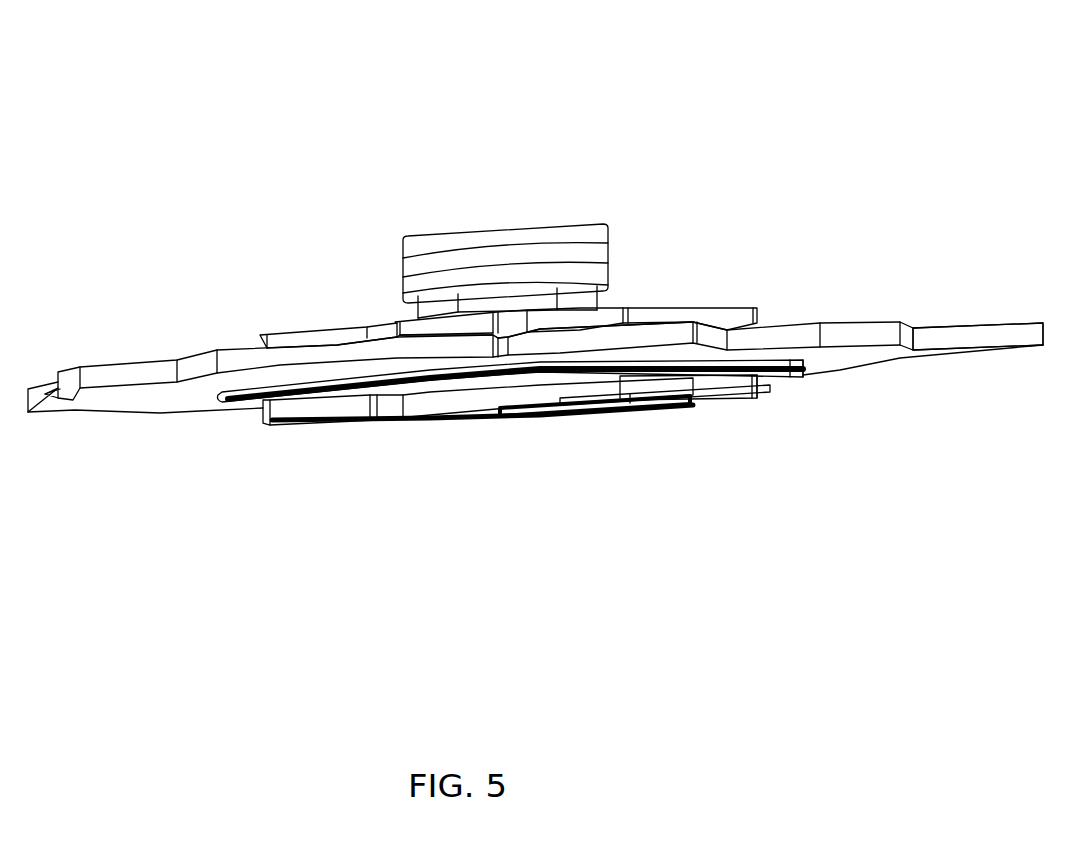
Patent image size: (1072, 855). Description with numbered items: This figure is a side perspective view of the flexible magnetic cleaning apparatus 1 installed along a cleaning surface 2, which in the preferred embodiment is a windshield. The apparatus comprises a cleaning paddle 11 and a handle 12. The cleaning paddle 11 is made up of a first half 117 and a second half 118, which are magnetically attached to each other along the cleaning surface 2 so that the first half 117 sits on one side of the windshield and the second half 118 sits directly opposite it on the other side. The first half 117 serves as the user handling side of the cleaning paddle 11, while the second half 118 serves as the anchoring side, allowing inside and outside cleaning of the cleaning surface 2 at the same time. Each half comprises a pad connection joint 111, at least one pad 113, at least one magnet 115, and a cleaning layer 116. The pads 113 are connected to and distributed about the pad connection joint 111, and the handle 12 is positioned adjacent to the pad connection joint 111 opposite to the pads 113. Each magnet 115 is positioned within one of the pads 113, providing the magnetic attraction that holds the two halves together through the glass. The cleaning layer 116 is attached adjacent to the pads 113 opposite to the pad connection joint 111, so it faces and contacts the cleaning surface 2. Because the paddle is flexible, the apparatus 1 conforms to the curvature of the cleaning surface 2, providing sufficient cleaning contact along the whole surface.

The flexible magnetic cleaning apparatus 1 is at (418, 98).
The cleaning surface 2 is at (990, 318).
The cleaning paddle 11 is at (305, 262).
The handle 12 is at (602, 203).
The pad connection joint 111 is at (548, 426).
The pad 113 is at (770, 404).
The magnet 115 is at (668, 414).
The cleaning layer 116 is at (807, 374).
The first half 117 is at (730, 233).
The second half 118 is at (347, 466).